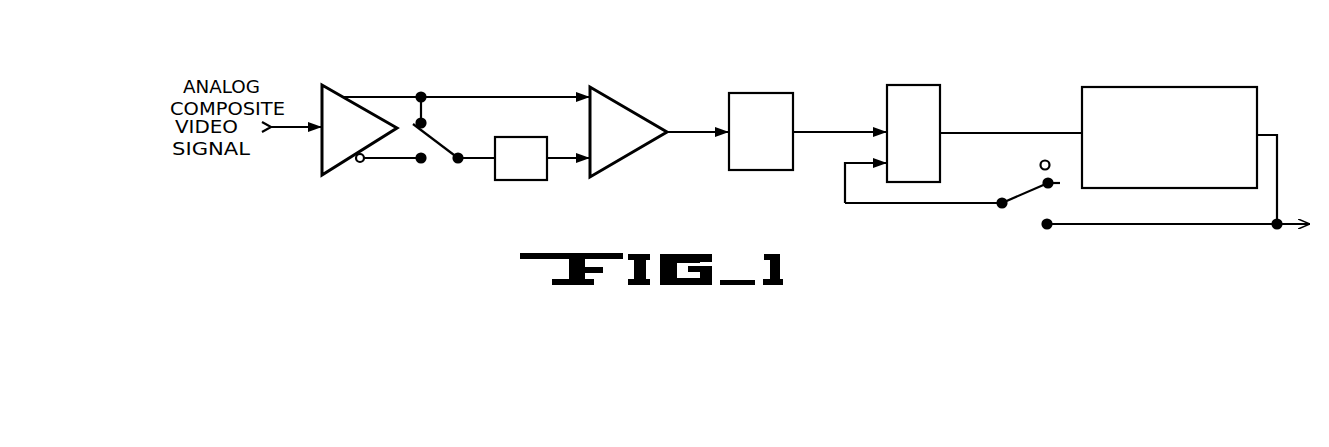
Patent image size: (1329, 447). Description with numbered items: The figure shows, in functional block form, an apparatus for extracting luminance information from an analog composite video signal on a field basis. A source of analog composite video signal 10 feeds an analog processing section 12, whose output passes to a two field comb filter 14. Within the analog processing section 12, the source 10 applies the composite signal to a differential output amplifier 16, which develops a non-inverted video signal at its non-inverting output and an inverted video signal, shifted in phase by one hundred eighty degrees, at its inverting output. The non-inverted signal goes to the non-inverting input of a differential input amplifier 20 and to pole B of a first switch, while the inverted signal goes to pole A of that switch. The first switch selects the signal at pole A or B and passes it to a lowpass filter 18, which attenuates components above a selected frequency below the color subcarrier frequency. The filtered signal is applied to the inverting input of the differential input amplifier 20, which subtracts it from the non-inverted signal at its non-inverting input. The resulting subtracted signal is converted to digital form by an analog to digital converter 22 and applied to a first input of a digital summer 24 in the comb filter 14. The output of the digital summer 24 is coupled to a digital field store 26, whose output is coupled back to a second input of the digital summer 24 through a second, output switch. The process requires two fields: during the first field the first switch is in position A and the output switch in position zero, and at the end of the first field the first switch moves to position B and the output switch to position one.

The source of analog composite video signal 10 is at (293, 127).
The analog processing section 12 is at (511, 128).
The two field comb filter 14 is at (1077, 143).
The differential output amplifier 16 is at (333, 93).
The lowpass filter 18 is at (520, 137).
The differential input amplifier 20 is at (635, 120).
The analog to digital converter 22 is at (773, 98).
The digital summer 24 is at (927, 88).
The digital field store 26 is at (1168, 92).